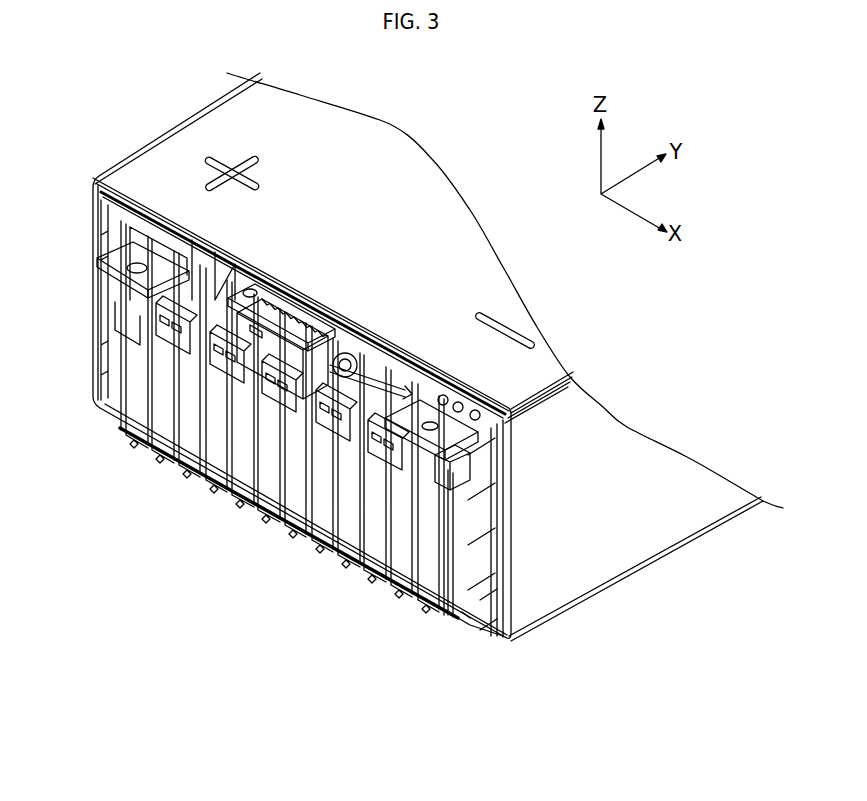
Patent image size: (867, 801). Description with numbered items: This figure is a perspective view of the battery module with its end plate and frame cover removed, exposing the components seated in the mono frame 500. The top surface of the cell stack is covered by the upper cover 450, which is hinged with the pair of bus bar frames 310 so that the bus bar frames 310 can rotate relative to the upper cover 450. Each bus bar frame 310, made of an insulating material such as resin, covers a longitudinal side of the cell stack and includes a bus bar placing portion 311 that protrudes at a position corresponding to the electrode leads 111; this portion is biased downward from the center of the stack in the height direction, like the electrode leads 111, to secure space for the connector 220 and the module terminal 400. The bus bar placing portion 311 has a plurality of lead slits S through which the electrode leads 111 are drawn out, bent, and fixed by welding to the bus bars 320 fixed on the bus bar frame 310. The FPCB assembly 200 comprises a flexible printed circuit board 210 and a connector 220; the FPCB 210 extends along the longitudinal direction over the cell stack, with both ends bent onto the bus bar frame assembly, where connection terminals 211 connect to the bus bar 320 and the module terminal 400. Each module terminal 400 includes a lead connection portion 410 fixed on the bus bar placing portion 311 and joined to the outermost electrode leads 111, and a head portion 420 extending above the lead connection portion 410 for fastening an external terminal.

The mono frame 500 is at (420, 207).
The upper cover 450 is at (130, 212).
The FPCB assembly 200 is at (320, 282).
The flexible printed circuit board 210 is at (293, 313).
The connector 220 is at (260, 293).
The connection terminal 211 is at (180, 335).
The lead slit S is at (300, 468).
The electrode lead 111 is at (327, 515).
The bus bar 320 is at (352, 555).
The bus bar placing portion 311 is at (463, 618).
The bus bar frame 310 is at (467, 607).
The module terminal 400 is at (508, 452).
The lead connection portion 410 is at (437, 480).
The head portion 420 is at (487, 450).